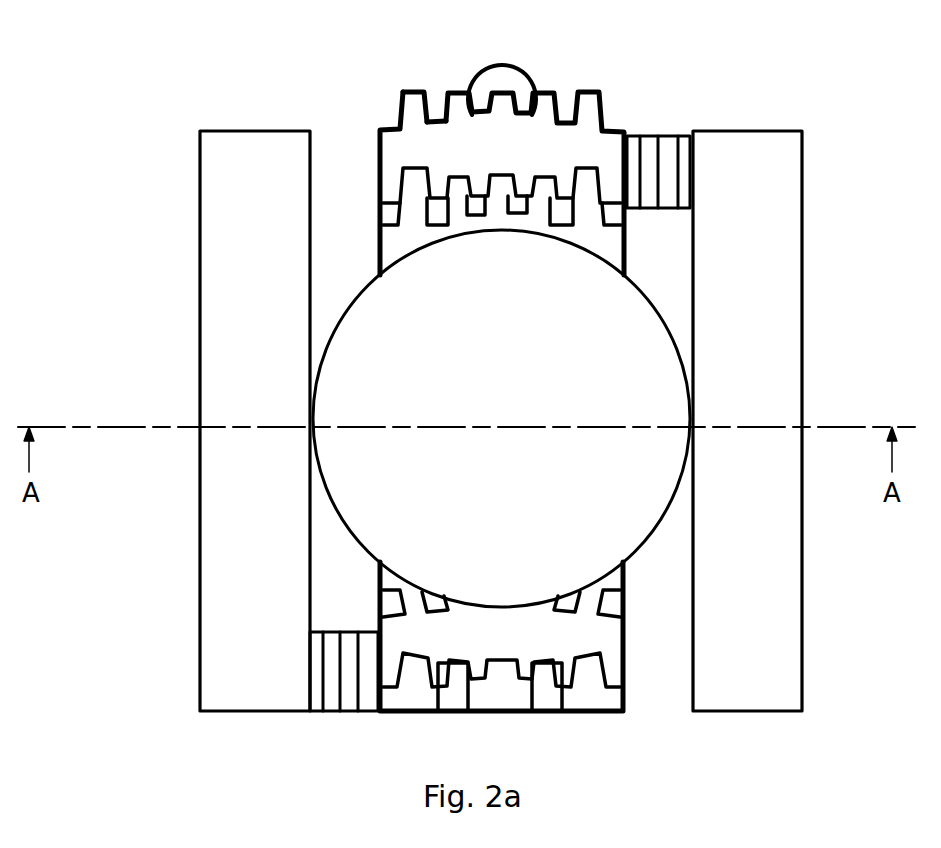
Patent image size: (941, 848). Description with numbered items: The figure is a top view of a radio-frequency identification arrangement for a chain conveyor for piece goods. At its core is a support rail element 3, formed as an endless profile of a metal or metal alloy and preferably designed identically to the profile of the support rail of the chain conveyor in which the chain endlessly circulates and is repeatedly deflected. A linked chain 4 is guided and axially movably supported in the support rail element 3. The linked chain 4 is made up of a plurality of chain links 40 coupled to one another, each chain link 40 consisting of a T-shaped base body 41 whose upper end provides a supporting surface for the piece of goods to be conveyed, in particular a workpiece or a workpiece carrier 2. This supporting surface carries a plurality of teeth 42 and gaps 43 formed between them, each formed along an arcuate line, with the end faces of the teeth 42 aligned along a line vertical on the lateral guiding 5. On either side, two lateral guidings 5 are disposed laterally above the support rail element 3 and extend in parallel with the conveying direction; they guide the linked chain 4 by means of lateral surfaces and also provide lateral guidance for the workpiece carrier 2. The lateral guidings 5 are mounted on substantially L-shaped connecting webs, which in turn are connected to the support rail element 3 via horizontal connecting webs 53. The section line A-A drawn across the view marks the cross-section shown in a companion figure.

The workpiece carrier 2 is at (363, 405).
The support rail element 3 is at (385, 217).
The linked chain 4 is at (490, 705).
The lateral guidings 5 is at (213, 598).
The chain link 40 is at (366, 145).
The T-shaped base body 41 is at (528, 142).
The teeth 42 is at (402, 97).
The gaps 43 is at (432, 102).
The horizontal connecting webs 53 is at (665, 148).